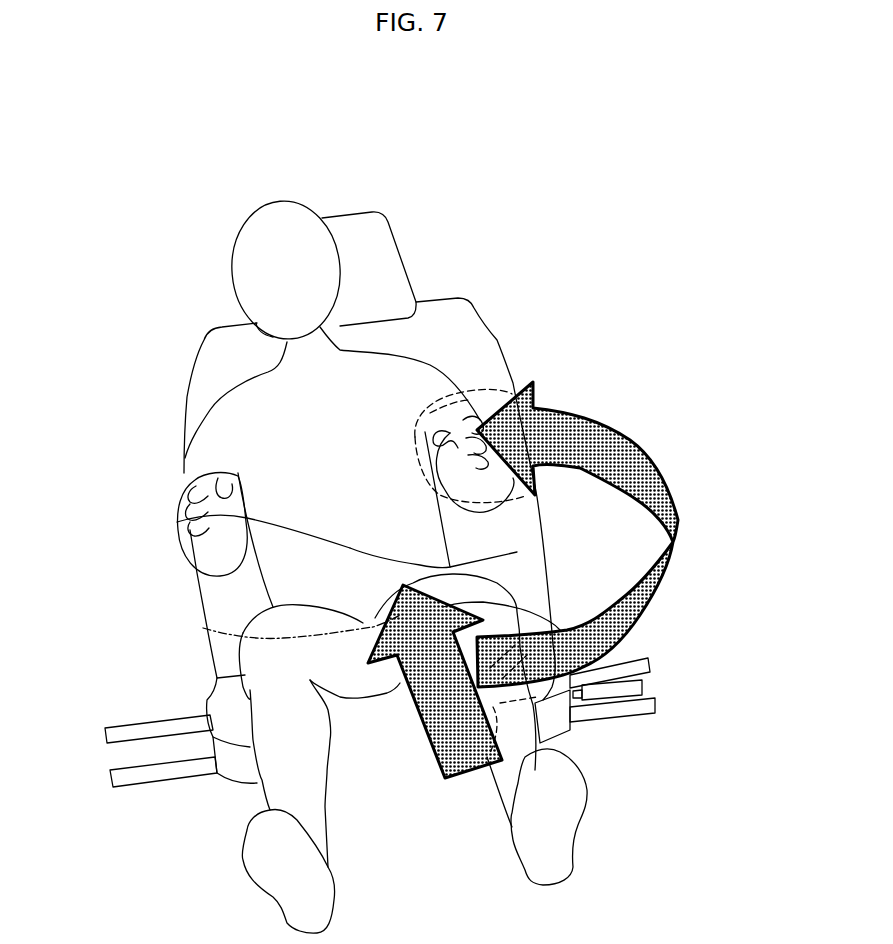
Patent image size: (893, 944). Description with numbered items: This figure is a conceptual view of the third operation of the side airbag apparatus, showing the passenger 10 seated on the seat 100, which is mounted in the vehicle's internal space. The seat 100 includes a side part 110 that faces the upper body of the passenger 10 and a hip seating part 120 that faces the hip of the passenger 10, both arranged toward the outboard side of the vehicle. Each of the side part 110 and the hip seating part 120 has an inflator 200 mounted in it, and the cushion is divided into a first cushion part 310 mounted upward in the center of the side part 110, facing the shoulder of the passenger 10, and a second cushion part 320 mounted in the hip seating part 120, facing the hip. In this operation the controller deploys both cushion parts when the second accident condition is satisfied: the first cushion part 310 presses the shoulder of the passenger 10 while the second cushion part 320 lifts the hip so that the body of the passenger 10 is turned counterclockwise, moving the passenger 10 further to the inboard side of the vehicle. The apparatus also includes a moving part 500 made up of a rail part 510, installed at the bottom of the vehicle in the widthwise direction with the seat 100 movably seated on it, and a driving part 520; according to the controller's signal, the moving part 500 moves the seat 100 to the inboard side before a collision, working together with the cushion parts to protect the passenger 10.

The passenger 10 is at (240, 427).
The seat 100 is at (291, 499).
The side part 110 is at (177, 522).
The hip seating part 120 is at (203, 628).
The inflator 200 is at (517, 395).
The first cushion part 310 is at (535, 495).
The second cushion part 320 is at (455, 770).
The moving part 500 is at (683, 715).
The rail part 510 is at (647, 707).
The driving part 520 is at (640, 683).